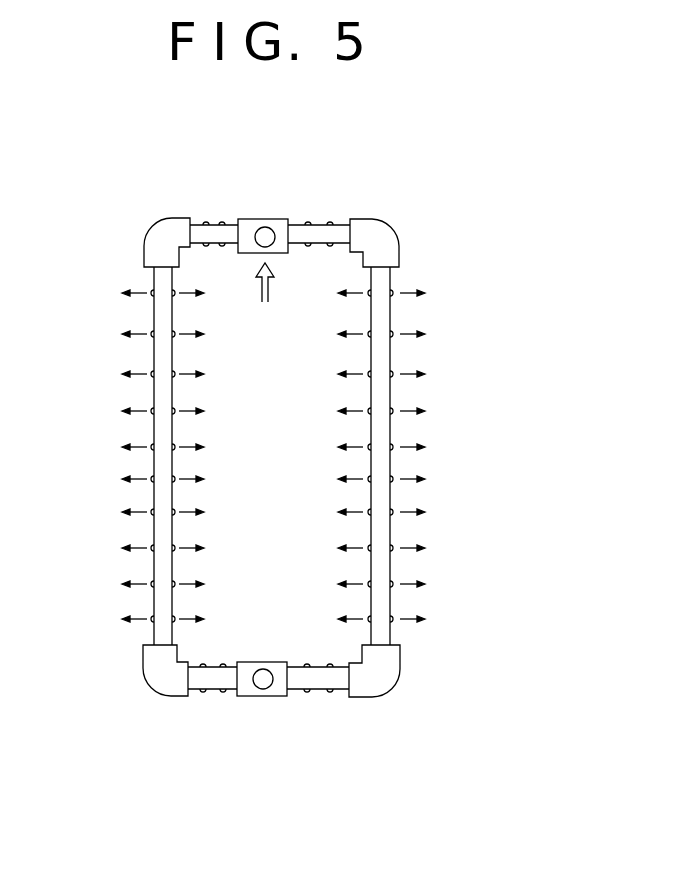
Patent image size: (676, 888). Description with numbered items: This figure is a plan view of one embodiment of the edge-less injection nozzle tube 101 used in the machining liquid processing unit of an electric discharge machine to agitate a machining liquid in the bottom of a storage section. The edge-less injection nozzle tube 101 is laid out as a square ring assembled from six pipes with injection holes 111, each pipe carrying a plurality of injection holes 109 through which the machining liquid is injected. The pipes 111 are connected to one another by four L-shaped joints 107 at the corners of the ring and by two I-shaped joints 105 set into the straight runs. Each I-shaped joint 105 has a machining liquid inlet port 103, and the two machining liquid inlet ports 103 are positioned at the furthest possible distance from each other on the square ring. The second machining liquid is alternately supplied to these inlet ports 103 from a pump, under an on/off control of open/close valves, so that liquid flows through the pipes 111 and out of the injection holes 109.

The edge-less injection nozzle tube 101 is at (448, 332).
The machining liquid inlet port 103 is at (268, 242).
The I-shaped joint 105 is at (280, 220).
The L-shaped joint 107 is at (158, 238).
The injection hole 109 is at (222, 227).
The pipe with injection holes 111 is at (233, 247).